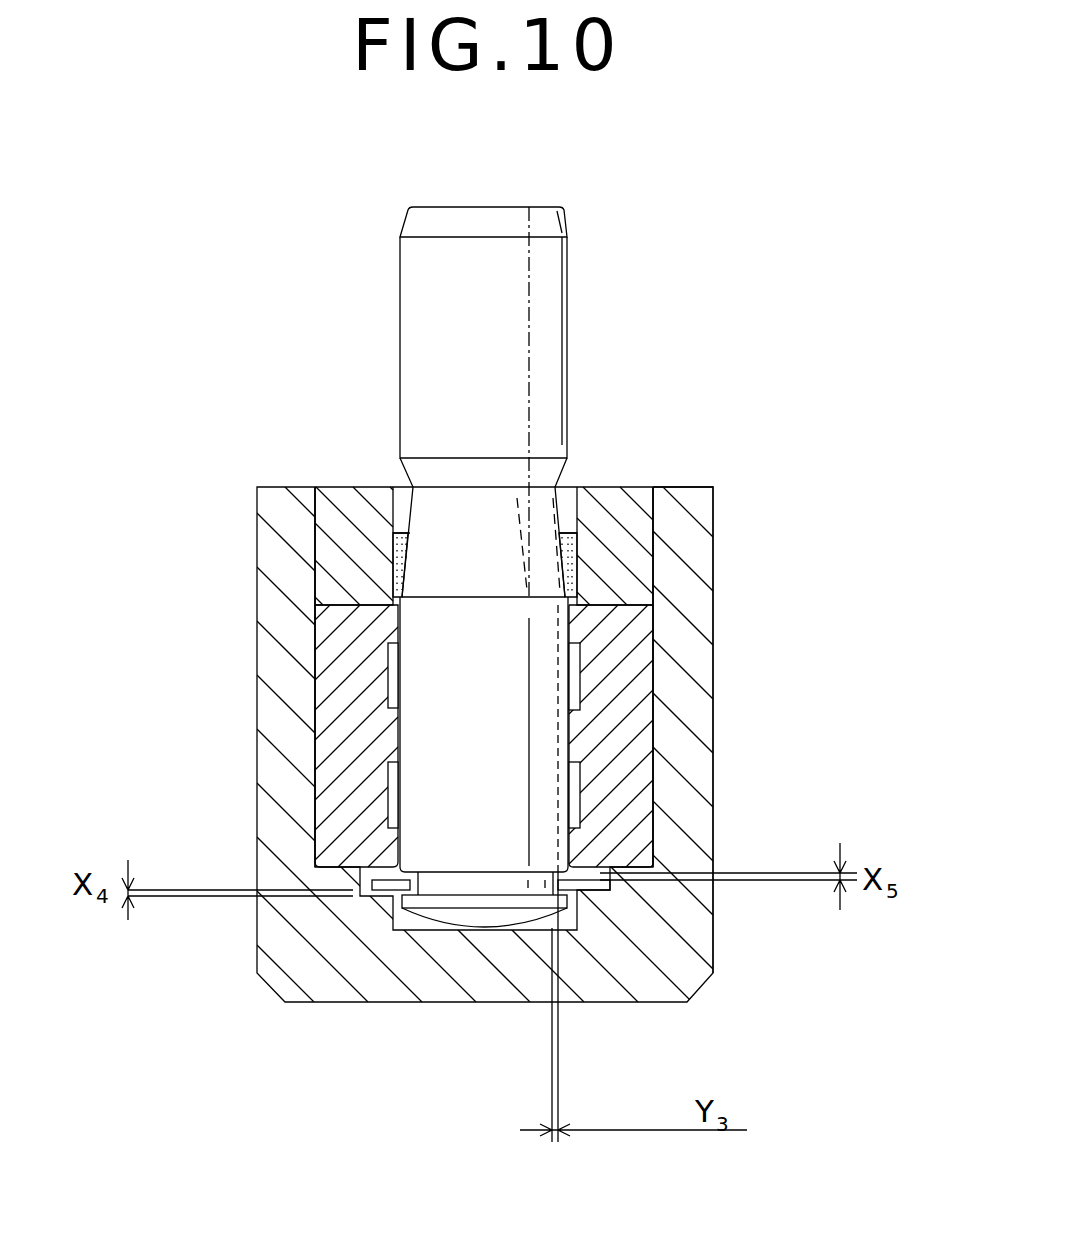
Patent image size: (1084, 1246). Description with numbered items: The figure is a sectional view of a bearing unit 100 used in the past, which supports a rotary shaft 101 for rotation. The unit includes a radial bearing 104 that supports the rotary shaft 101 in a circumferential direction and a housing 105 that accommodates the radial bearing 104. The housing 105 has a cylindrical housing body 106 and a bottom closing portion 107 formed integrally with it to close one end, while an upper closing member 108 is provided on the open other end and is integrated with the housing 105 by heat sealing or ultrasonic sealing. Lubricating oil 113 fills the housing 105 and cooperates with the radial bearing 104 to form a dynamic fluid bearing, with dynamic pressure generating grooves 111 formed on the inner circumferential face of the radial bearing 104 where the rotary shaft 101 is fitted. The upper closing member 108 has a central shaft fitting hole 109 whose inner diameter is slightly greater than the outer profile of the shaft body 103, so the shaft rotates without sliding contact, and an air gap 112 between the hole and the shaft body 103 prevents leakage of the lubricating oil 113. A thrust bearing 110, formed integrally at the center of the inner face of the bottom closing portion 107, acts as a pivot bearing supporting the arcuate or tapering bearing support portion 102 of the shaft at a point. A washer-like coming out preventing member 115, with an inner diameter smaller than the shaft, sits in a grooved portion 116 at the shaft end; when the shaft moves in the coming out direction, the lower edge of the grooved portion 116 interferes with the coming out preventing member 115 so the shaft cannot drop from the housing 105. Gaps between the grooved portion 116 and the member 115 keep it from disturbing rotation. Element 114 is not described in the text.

The bearing unit 100 is at (708, 330).
The rotary shaft 101 is at (540, 803).
The bearing support portion 102 is at (464, 915).
The shaft body 103 is at (540, 765).
The radial bearing 104 is at (620, 680).
The housing 105 is at (700, 722).
The housing body 106 is at (700, 622).
The bottom closing portion 107 is at (648, 990).
The upper closing member 108 is at (637, 493).
The shaft fitting hole 109 is at (566, 492).
The thrust bearing 110 is at (483, 930).
The dynamic pressure generating grooves 111 is at (388, 682).
The air gap 112 is at (402, 490).
The lubricating oil 113 is at (588, 566).
The tapered bore 114 is at (533, 497).
The coming out preventing member 115 is at (377, 883).
The grooved portion 116 is at (432, 886).